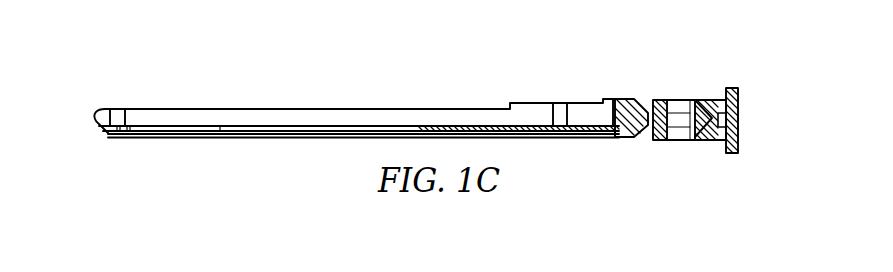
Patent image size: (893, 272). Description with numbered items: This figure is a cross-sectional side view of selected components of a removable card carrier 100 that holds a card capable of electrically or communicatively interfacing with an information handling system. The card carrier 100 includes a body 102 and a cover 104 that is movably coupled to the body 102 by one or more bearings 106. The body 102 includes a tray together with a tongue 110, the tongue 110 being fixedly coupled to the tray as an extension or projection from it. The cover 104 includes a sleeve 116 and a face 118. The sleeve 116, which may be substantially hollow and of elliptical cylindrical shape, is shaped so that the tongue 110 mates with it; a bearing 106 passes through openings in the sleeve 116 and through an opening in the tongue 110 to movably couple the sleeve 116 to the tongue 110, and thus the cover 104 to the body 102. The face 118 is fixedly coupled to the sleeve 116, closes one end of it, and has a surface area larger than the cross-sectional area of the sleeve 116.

The card carrier 100 is at (344, 70).
The body 102 is at (264, 118).
The cover 104 is at (711, 140).
The bearing 106 is at (684, 100).
The tongue 110 is at (666, 114).
The sleeve 116 is at (718, 100).
The face 118 is at (738, 120).